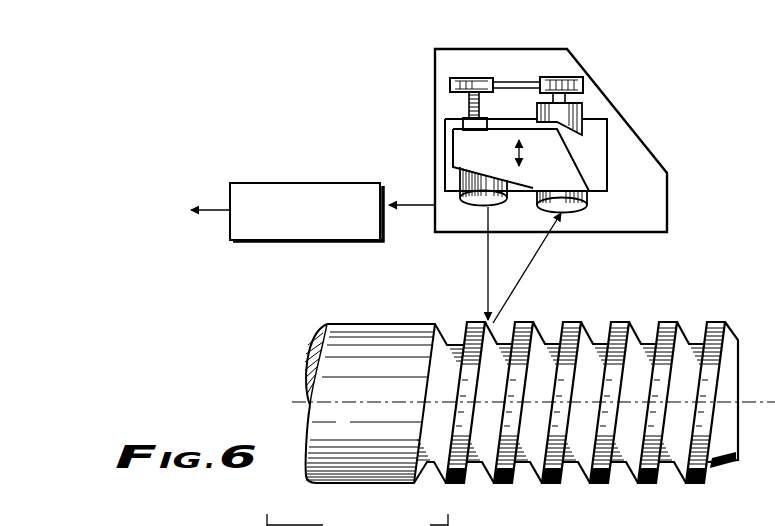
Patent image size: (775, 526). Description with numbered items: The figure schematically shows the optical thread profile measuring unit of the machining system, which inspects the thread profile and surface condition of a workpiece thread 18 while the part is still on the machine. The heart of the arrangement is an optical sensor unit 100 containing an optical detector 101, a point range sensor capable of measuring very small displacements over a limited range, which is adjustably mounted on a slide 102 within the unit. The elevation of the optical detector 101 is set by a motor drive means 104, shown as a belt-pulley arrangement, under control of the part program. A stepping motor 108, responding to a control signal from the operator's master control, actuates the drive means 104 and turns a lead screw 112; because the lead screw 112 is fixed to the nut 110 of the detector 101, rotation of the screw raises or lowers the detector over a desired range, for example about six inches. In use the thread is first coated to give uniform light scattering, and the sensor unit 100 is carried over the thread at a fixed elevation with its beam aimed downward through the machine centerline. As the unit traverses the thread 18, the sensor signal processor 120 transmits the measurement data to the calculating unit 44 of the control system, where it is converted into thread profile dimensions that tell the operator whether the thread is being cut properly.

The workpiece thread 18 is at (360, 323).
The calculating unit 44 is at (136, 213).
The optical sensor unit 100 is at (634, 116).
The optical detector 101 is at (567, 165).
The slide 102 is at (458, 167).
The motor drive means 104 is at (515, 72).
The stepping motor 108 is at (585, 117).
The nut 110 is at (445, 118).
The lead screw 112 is at (467, 106).
The sensor signal processor 120 is at (312, 153).